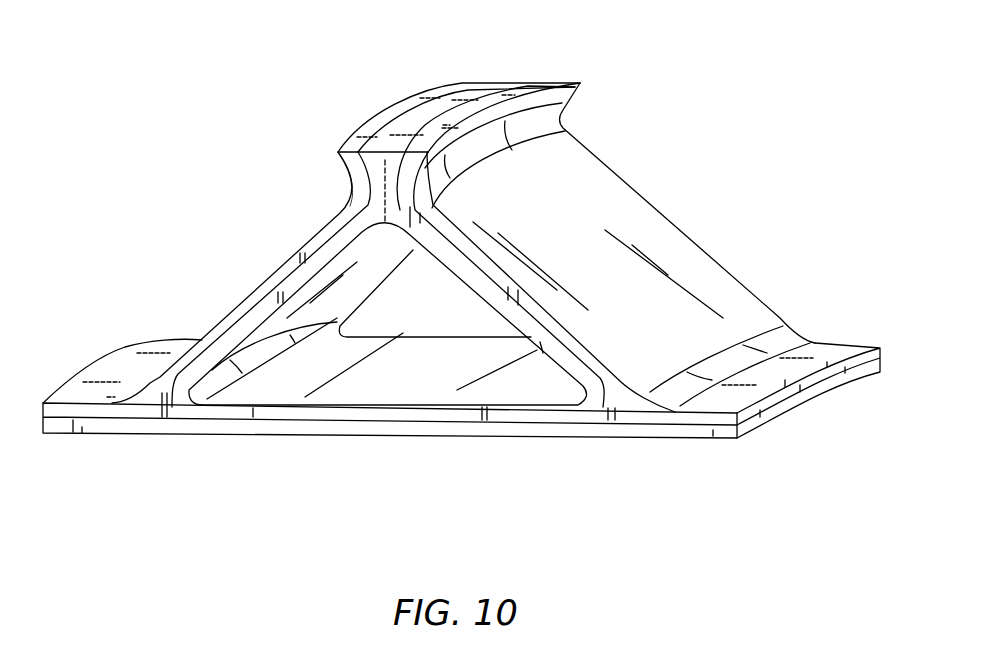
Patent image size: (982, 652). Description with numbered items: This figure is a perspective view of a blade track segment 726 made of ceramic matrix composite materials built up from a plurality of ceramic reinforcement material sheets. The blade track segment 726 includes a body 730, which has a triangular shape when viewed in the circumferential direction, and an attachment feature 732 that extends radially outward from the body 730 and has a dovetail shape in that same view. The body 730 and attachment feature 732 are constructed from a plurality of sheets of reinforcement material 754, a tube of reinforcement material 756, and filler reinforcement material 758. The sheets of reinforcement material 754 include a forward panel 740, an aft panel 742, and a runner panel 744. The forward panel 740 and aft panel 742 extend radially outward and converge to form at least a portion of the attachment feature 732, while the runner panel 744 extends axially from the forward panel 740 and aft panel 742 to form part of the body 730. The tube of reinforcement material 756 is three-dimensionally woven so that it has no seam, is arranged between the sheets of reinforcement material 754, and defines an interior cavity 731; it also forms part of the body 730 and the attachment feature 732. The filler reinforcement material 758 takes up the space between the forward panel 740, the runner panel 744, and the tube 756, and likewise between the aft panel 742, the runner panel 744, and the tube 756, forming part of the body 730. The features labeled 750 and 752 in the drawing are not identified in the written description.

The blade track segment 726 is at (762, 97).
The body 730 is at (770, 270).
The interior cavity 731 is at (440, 392).
The attachment feature 732 is at (622, 108).
The forward panel 740 is at (163, 406).
The aft panel 742 is at (627, 393).
The runner panel 744 is at (332, 426).
The cap 750 is at (345, 125).
The web junction 752 is at (330, 188).
The plurality of sheets of reinforcement material 754 is at (322, 496).
The tube of reinforcement material 756 is at (245, 333).
The filler reinforcement material 758 is at (150, 413).